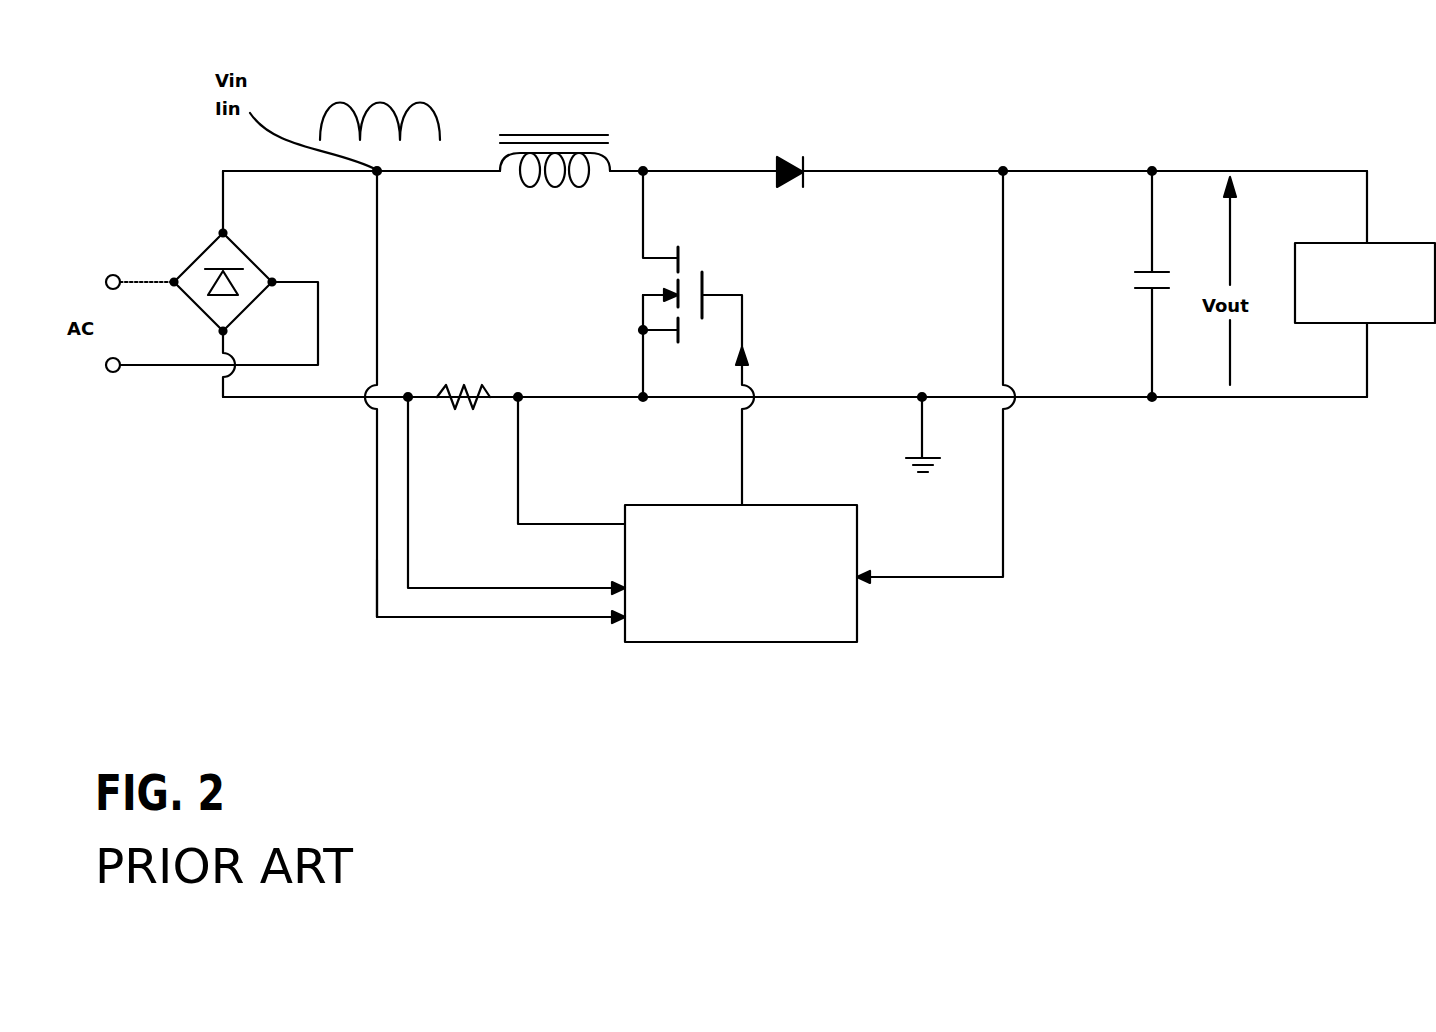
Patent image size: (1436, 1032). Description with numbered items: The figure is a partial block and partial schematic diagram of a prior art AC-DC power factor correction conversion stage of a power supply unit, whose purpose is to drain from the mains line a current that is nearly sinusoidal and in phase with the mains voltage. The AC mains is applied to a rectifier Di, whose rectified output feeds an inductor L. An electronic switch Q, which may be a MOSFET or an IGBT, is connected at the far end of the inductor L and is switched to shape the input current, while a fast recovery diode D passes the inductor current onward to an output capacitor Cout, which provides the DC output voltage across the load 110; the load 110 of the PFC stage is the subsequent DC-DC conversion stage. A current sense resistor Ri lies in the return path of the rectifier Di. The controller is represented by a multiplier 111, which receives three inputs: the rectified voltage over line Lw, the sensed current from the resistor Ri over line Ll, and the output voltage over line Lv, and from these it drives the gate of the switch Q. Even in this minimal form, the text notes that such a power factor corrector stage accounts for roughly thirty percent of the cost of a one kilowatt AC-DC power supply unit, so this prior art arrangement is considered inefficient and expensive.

The load 110 is at (1408, 243).
The multiplier 111 is at (858, 623).
The rectifier Di is at (212, 265).
The inductor L is at (555, 147).
The electronic switch Q is at (696, 338).
The fast recovery diode D is at (790, 156).
The current sense resistor Ri is at (463, 384).
The output capacitor Cout is at (1123, 284).
The rectified voltage sense line Lw is at (377, 548).
The current sense line Ll is at (522, 590).
The output voltage sense line Lv is at (1004, 515).